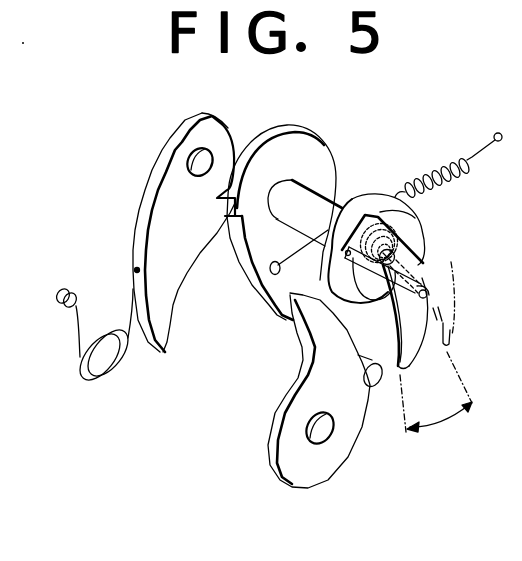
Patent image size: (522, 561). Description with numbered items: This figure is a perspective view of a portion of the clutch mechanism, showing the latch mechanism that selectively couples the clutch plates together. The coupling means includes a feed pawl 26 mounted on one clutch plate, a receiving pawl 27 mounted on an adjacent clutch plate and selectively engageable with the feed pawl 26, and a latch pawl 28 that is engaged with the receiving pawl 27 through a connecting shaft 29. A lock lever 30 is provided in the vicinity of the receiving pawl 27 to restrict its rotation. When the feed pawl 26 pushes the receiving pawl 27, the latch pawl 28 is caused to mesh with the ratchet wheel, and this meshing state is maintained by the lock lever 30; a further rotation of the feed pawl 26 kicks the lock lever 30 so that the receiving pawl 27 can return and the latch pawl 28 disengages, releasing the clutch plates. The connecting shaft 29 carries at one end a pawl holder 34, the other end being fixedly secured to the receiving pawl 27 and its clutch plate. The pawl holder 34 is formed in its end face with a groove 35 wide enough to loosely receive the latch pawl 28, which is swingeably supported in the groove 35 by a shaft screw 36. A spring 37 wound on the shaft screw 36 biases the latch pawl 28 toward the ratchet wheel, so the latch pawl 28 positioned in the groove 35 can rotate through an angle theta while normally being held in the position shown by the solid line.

The feed pawl 26 is at (287, 409).
The receiving pawl 27 is at (297, 127).
The latch pawl 28 is at (418, 335).
The connecting shaft 29 is at (310, 205).
The lock lever 30 is at (156, 167).
The pawl holder 34 is at (372, 196).
The groove 35 is at (427, 266).
The shaft screw 36 is at (391, 256).
The spring 37 is at (431, 286).